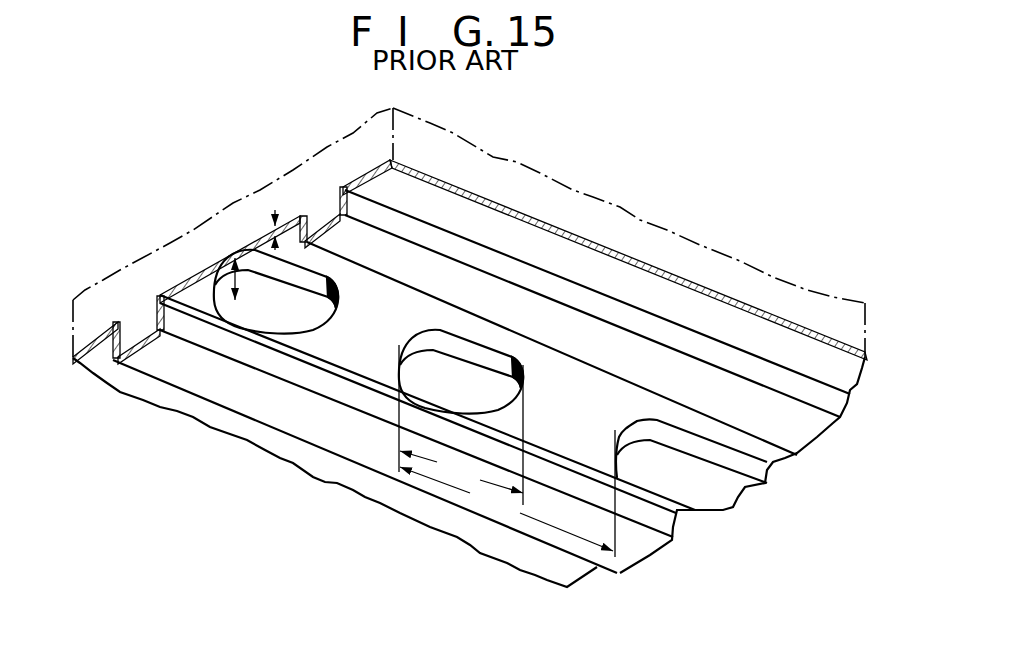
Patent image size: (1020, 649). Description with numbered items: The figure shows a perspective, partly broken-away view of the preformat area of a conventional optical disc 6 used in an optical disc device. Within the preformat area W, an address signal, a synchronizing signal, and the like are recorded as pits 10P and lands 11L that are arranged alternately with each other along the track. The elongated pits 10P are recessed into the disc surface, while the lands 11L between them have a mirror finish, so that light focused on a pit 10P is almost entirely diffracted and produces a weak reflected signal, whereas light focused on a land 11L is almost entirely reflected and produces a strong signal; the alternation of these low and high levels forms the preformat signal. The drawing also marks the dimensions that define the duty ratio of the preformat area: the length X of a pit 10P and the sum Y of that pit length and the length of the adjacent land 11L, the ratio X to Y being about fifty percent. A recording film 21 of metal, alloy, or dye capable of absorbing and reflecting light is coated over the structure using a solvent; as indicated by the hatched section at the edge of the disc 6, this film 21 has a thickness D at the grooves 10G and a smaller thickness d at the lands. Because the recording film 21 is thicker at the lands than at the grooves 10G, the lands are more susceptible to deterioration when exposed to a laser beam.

The optical disc 6 is at (202, 182).
The recording film 21 is at (393, 162).
The gas passage groove 10G is at (515, 250).
The pit 10P is at (312, 279).
The land 11L is at (368, 350).
The length of pit X is at (461, 425).
The sum of pit length and land length Y is at (507, 493).
The preformat area W is at (308, 380).
The thickness of recording film at grooves D is at (247, 286).
The thickness of recording film at lands d is at (285, 221).